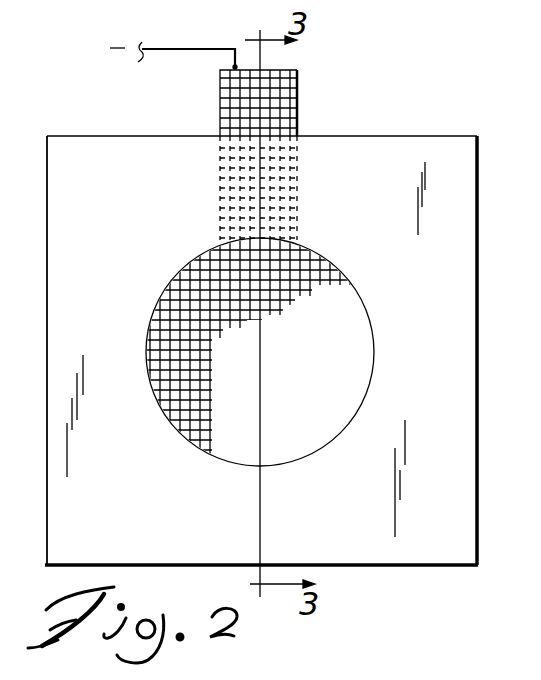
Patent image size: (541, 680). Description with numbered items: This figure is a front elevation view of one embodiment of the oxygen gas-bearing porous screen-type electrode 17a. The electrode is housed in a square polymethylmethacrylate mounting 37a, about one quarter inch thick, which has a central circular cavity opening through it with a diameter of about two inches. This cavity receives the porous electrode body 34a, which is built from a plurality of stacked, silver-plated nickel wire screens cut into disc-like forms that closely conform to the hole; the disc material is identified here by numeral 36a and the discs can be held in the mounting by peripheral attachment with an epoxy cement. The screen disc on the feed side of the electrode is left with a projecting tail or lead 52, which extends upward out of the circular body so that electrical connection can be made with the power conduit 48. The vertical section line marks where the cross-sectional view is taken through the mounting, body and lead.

The screen-type electrode 17a is at (124, 126).
The porous electrode body 34a is at (186, 267).
The hemispherical surface 36a is at (222, 420).
The mounting 37a is at (413, 545).
The power conduit 48 is at (192, 49).
The lead 52 is at (240, 86).